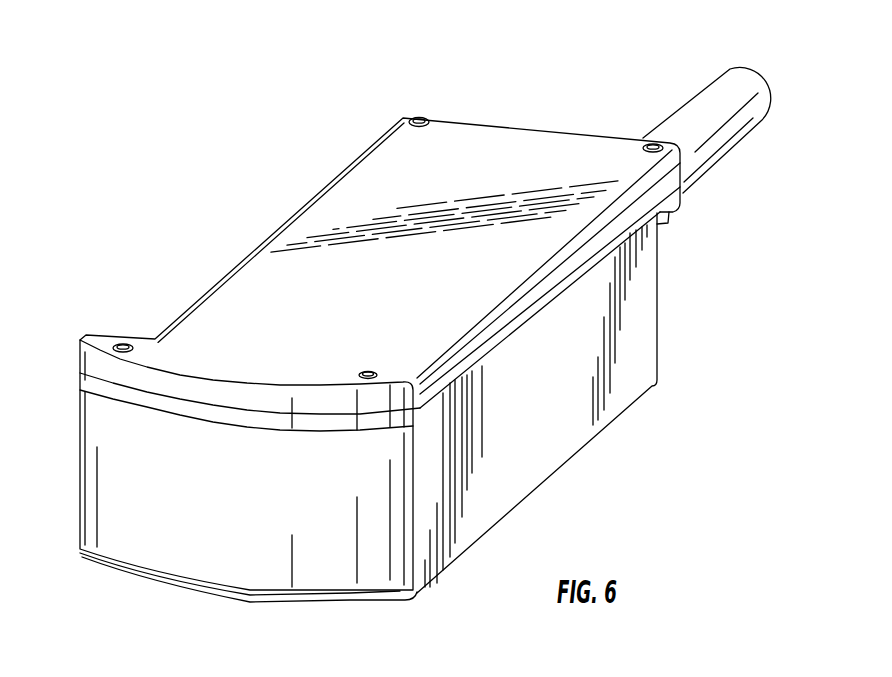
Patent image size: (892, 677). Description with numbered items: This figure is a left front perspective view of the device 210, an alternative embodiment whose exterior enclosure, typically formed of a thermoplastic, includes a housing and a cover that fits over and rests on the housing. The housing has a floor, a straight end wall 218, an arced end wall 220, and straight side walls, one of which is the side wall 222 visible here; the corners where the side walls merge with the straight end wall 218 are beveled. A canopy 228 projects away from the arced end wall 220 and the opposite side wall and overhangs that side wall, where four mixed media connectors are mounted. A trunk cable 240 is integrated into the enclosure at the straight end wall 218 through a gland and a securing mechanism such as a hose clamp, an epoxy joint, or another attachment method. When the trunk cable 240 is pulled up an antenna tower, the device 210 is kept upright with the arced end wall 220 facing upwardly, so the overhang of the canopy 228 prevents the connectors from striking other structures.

The device 210 is at (156, 161).
The straight end wall 218 is at (678, 313).
The arced end wall 220 is at (200, 548).
The straight side wall 222 is at (547, 433).
The canopy 228 is at (105, 344).
The trunk cable 240 is at (685, 113).